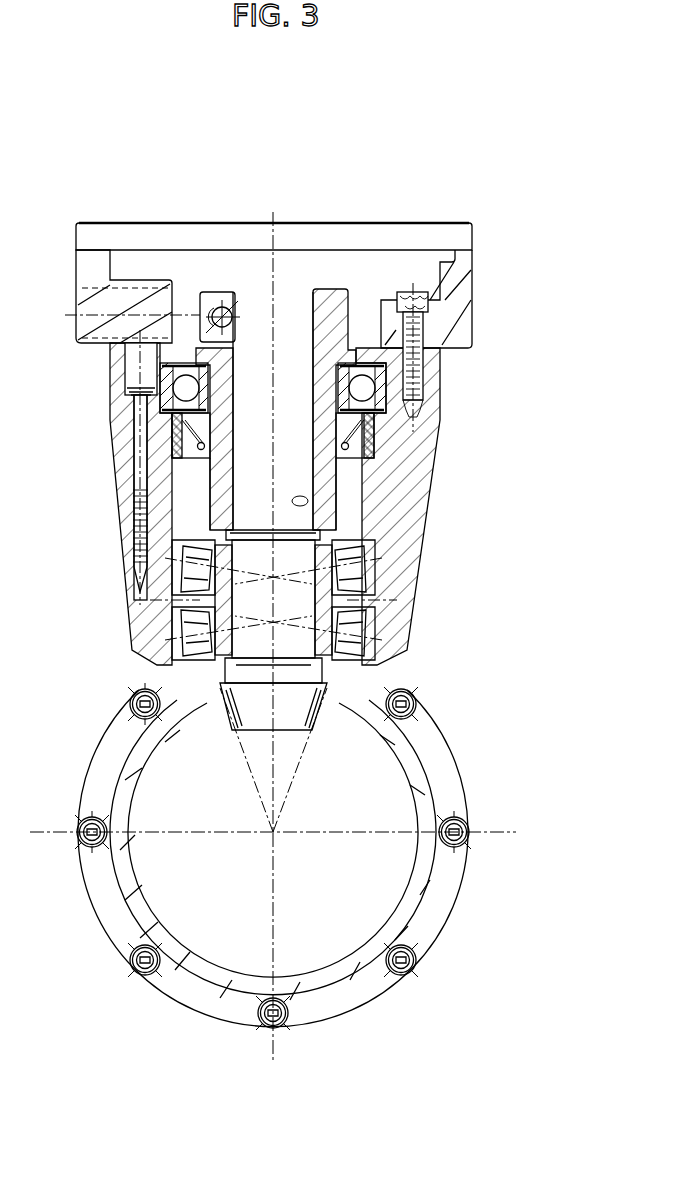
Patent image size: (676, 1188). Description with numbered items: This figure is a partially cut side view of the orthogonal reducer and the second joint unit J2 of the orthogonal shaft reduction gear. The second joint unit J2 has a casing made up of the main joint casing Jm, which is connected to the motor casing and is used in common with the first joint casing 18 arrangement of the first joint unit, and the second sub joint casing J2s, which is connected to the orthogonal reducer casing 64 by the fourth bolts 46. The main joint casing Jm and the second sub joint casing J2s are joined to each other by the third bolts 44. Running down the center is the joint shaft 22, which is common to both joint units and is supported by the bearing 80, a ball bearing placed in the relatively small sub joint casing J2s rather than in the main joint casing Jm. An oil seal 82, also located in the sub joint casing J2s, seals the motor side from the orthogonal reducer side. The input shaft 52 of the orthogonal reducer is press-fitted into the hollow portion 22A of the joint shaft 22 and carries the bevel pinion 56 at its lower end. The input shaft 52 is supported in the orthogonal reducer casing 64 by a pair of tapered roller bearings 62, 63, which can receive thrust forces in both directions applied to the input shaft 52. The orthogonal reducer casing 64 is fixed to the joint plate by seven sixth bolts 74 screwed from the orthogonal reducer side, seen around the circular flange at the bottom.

The second joint unit J2 is at (484, 256).
The main joint casing Jm is at (462, 290).
The third bolts 44 is at (424, 336).
The first joint casing 18 is at (476, 353).
The bearing 80 is at (372, 389).
The second sub joint casing J2s is at (430, 420).
The oil seal 82 is at (376, 443).
The joint shaft 22 is at (326, 470).
The hollow portion 22A is at (306, 503).
The tapered roller bearing 62 is at (384, 570).
The input shaft 52 is at (302, 598).
The tapered roller bearing 63 is at (384, 640).
The fourth bolts 46 is at (136, 446).
The bevel pinion 56 is at (318, 715).
The sixth bolts 74 is at (468, 828).
The orthogonal reducer casing 64 is at (445, 898).